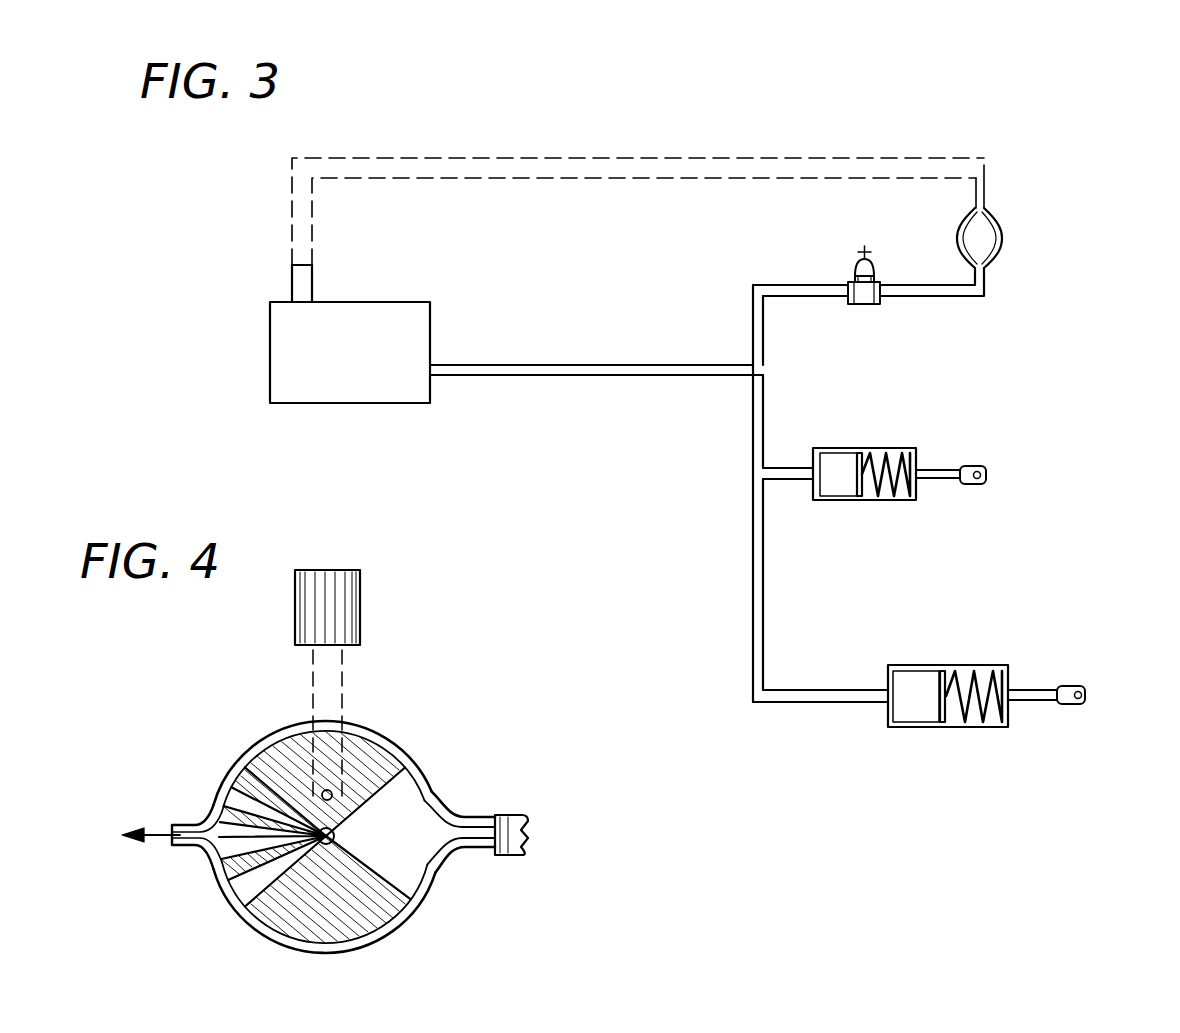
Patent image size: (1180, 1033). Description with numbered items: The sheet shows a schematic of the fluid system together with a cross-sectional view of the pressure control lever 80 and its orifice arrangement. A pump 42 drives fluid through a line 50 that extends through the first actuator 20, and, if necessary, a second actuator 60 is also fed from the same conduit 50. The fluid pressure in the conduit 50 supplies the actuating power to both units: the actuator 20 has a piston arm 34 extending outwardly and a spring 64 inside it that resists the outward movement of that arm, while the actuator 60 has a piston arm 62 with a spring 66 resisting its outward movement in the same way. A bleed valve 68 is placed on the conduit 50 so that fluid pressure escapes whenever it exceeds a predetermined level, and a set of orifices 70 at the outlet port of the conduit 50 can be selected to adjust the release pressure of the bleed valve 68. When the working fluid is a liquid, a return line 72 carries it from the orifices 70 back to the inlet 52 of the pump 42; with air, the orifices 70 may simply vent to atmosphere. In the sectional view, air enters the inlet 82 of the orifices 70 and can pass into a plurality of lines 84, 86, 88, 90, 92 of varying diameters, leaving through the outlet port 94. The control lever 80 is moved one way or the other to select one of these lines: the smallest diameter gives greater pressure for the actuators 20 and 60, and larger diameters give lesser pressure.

In FIG. 3, the first actuator 20 is at (834, 458).
In FIG. 3, the piston arm 34 is at (986, 467).
In FIG. 3, the pump 42 is at (432, 314).
In FIG. 3, the line 50 is at (562, 370).
In FIG. 3, the inlet 52 is at (292, 284).
In FIG. 3, the second actuator 60 is at (914, 715).
In FIG. 3, the piston arm 62 is at (1072, 705).
In FIG. 3, the spring 64 is at (912, 450).
In FIG. 3, the spring 66 is at (986, 721).
In FIG. 3, the bleed valve 68 is at (882, 306).
In FIG. 3, the orifices 70 is at (1003, 232).
In FIG. 4, the orifices 70 is at (420, 716).
In FIG. 3, the return line 72 is at (698, 158).
In FIG. 4, the pressure control lever 80 is at (355, 620).
In FIG. 4, the inlet 82 is at (470, 822).
In FIG. 4, the line 84 is at (234, 910).
In FIG. 4, the line 86 is at (216, 866).
In FIG. 4, the line 88 is at (240, 772).
In FIG. 4, the line 90 is at (226, 796).
In FIG. 4, the line 92 is at (208, 838).
In FIG. 4, the outlet port 94 is at (176, 826).